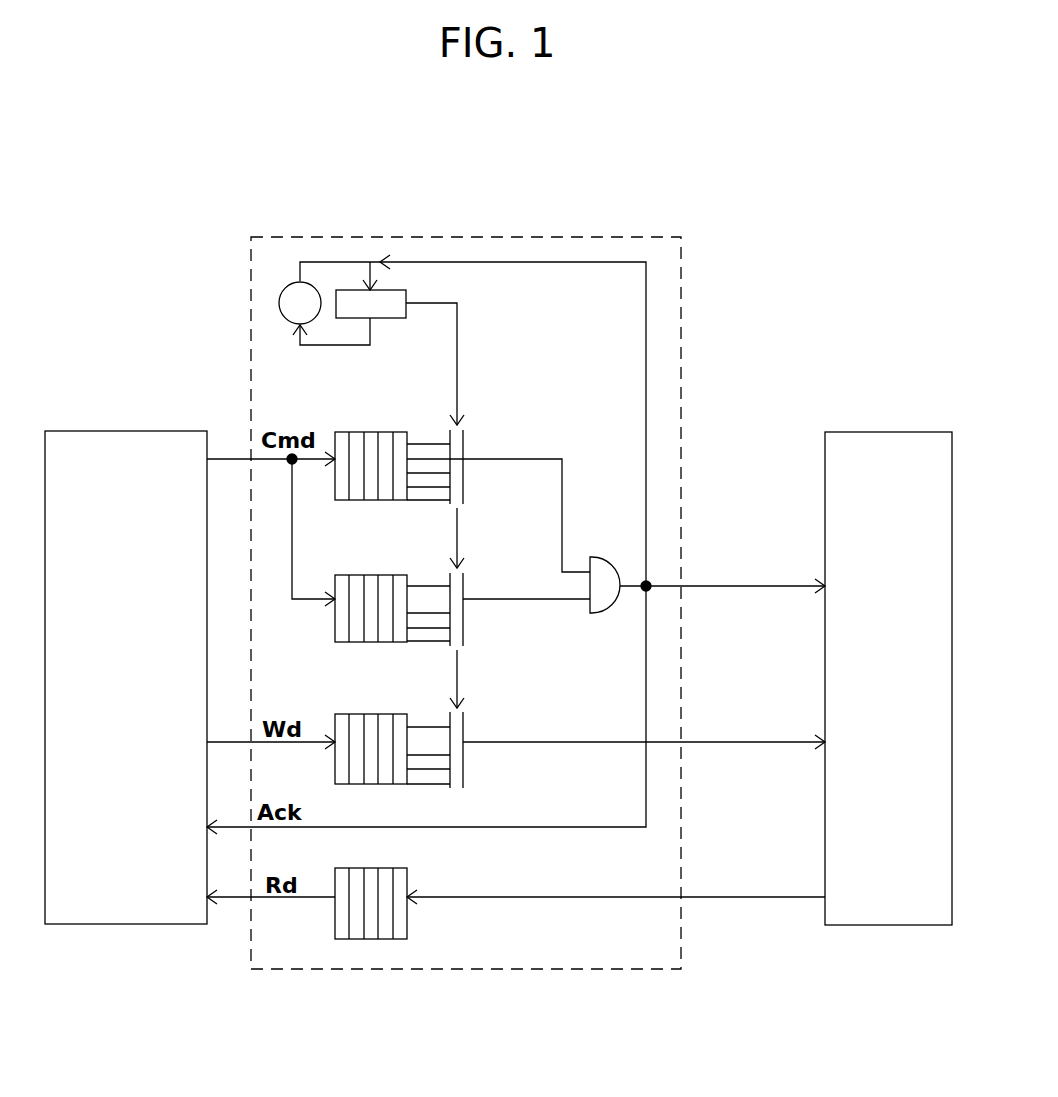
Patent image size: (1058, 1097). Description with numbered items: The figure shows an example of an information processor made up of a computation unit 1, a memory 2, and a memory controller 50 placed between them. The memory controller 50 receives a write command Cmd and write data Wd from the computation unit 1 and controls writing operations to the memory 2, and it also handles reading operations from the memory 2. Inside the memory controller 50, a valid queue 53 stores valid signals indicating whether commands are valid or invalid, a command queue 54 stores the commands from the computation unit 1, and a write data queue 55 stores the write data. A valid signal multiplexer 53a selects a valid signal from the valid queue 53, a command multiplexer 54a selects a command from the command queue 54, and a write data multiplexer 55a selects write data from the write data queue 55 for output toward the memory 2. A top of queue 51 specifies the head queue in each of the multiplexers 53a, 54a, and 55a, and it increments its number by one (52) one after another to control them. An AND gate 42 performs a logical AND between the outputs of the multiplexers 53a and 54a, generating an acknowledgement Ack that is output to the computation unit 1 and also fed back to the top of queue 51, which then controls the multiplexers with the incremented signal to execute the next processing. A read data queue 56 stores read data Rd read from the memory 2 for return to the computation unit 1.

The computation unit 1 is at (88, 431).
The memory 2 is at (900, 432).
The memory controller 50 is at (588, 237).
The top of queue 51 is at (390, 318).
The increment by +1 52 is at (290, 323).
The valid queue 53 is at (335, 477).
The valid signal multiplexer 53a is at (457, 504).
The command queue 54 is at (333, 622).
The command multiplexer 54a is at (457, 646).
The write data queue 55 is at (333, 757).
The write data multiplexer 55a is at (457, 786).
The read data queue 56 is at (407, 925).
The AND gate 42 is at (620, 600).